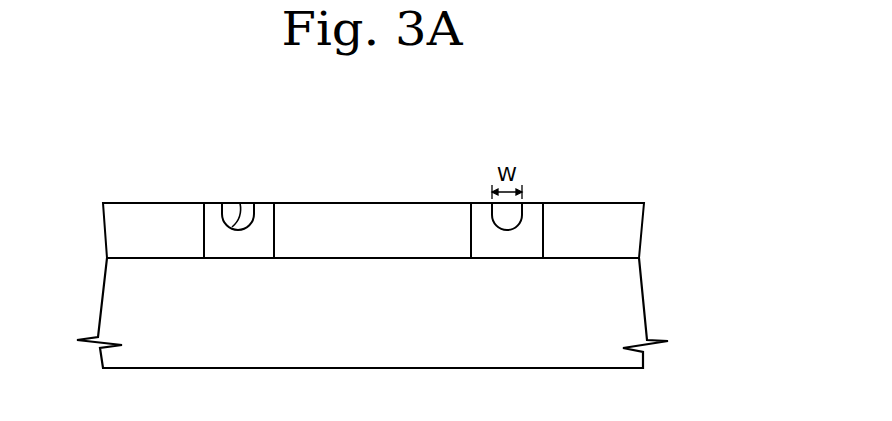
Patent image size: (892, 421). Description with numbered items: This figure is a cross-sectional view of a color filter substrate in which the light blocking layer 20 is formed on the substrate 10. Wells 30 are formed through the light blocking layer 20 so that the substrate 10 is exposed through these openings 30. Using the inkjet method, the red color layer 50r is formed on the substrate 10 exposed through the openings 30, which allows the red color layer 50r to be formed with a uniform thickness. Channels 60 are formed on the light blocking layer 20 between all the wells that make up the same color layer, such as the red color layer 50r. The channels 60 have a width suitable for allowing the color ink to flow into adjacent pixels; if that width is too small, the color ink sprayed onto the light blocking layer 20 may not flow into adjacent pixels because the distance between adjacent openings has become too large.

The substrate 10 is at (632, 305).
The red color layer 50r is at (641, 233).
The wells 30 is at (204, 230).
The light blocking layer 20 is at (265, 212).
The channels 60 is at (240, 203).